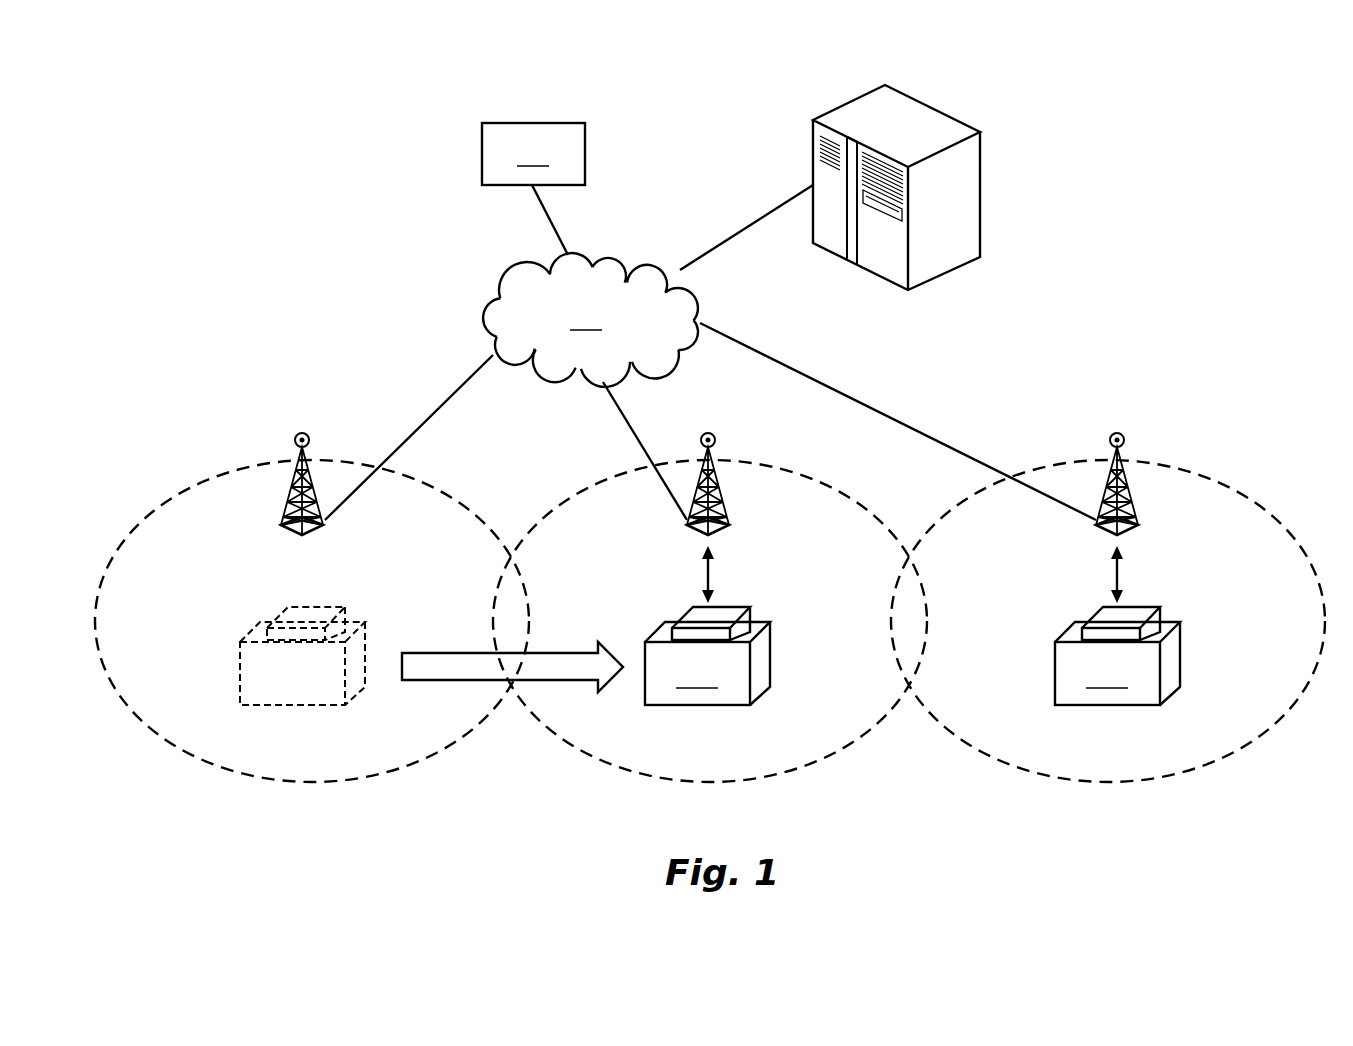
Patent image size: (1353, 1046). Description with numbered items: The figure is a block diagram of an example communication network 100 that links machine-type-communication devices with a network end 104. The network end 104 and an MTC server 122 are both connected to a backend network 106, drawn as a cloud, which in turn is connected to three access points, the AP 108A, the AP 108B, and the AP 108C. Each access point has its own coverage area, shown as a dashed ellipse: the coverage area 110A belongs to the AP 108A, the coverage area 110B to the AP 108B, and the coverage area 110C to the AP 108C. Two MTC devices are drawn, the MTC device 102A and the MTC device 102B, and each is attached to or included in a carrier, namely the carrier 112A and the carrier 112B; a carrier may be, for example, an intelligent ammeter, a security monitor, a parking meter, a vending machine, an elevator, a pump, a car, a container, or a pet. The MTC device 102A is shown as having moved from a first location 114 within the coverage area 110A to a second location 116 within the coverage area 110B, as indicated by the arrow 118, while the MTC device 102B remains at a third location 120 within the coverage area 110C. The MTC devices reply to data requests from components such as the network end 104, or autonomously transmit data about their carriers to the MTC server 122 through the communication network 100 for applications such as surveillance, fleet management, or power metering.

The communication network 100 is at (305, 131).
The MTC device 102A is at (735, 607).
The MTC device 102B is at (1145, 607).
The network end 104 is at (937, 110).
The backend network 106 is at (590, 320).
The AP 108A is at (287, 498).
The AP 108B is at (723, 498).
The AP 108C is at (1133, 498).
The coverage area 110A is at (418, 480).
The coverage area 110B is at (818, 480).
The coverage area 110C is at (1217, 480).
The carrier 112A is at (707, 663).
The carrier 112B is at (1117, 663).
The first location 114 is at (259, 604).
The second location 116 is at (666, 604).
The arrow 118 is at (448, 680).
The third location 120 is at (1076, 604).
The MTC server 122 is at (533, 154).